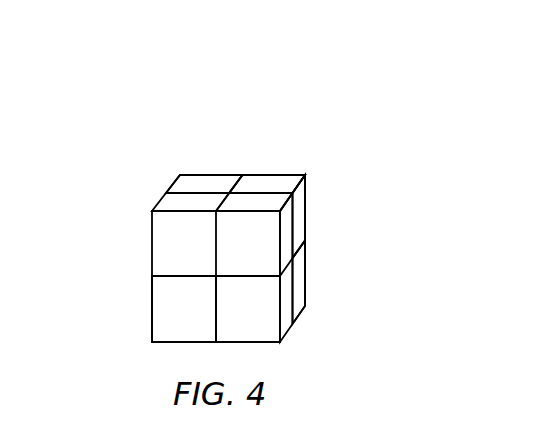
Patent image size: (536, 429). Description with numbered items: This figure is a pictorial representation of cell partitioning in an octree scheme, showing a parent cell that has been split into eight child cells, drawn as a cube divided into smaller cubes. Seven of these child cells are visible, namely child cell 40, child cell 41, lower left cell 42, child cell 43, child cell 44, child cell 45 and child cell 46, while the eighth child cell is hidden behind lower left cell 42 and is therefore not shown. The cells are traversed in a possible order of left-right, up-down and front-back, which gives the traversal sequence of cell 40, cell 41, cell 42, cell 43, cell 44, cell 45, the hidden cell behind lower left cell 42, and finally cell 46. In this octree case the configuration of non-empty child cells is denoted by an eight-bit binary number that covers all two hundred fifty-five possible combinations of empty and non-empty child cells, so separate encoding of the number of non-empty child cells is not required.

The child cell 40 is at (158, 243).
The child cell 41 is at (253, 210).
The lower left cell 42 is at (165, 315).
The child cell 43 is at (267, 317).
The child cell 44 is at (210, 173).
The child cell 45 is at (305, 210).
The child cell 46 is at (305, 278).